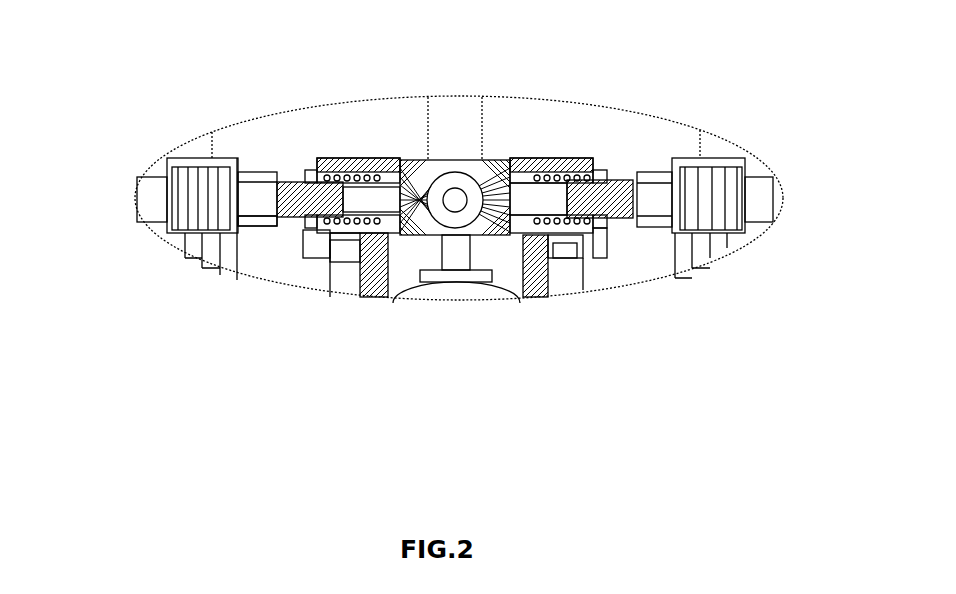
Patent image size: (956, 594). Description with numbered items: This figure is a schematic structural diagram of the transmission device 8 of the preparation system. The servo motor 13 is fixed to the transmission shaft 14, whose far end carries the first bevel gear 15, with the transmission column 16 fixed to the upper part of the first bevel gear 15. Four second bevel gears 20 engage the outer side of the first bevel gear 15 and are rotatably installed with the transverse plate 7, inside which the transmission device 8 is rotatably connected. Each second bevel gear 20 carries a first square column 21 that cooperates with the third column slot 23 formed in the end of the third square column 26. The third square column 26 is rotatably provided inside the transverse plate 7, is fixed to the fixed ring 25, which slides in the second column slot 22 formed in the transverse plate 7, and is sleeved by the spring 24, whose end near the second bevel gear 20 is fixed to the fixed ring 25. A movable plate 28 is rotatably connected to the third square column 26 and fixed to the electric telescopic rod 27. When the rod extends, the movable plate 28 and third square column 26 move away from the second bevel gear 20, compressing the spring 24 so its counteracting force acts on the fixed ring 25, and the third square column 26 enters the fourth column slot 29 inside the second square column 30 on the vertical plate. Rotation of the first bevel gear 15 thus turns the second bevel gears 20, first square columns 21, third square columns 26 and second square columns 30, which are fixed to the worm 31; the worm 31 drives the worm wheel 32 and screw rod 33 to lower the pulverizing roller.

The transverse plate 7 is at (527, 160).
The transmission device 8 is at (660, 225).
The servo motor 13 is at (428, 292).
The transmission shaft 14 is at (463, 250).
The first bevel gear 15 is at (478, 157).
The transmission column 16 is at (452, 140).
The second bevel gear 20 is at (410, 190).
The first square column 21 is at (553, 210).
The second column slot 22 is at (338, 168).
The third column slot 23 is at (543, 180).
The spring 24 is at (360, 232).
The fixed ring 25 is at (533, 233).
The third square column 26 is at (300, 195).
The electric telescopic rod 27 is at (323, 250).
The movable plate 28 is at (603, 247).
The fourth column slot 29 is at (250, 195).
The second square column 30 is at (246, 222).
The worm 31 is at (133, 203).
The worm wheel 32 is at (718, 207).
The screw rod 33 is at (718, 148).